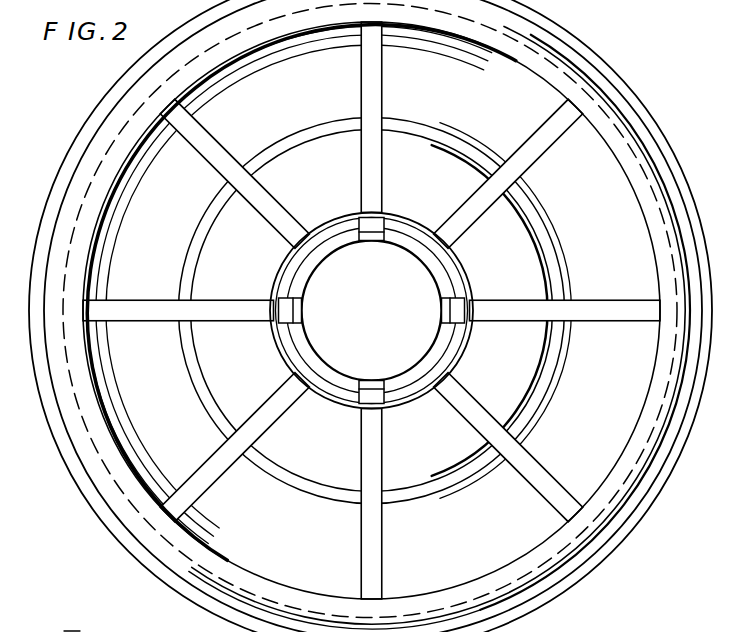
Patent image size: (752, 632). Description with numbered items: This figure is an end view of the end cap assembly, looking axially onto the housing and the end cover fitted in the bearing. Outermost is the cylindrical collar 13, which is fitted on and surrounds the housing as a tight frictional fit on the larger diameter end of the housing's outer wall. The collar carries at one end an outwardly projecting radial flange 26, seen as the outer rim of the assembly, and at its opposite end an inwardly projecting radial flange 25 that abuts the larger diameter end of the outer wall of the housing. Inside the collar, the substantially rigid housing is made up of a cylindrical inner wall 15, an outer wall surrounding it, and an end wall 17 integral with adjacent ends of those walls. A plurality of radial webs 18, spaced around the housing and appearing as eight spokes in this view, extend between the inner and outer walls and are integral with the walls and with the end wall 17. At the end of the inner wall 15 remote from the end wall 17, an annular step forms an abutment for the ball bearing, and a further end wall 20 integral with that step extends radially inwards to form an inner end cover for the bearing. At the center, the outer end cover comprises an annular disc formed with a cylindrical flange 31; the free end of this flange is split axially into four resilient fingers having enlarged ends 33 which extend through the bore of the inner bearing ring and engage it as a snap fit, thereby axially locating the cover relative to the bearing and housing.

The cylindrical collar 13 is at (538, 33).
The outwardly projecting radial flange 26 is at (588, 49).
The inwardly projecting radial flange 25 is at (618, 147).
The end wall 17 is at (613, 236).
The radial webs 18 is at (369, 72).
The cylindrical inner wall 15 is at (290, 134).
The end wall 20 is at (282, 409).
The cylindrical flange 31 is at (316, 255).
The enlarged ends 33 is at (374, 217).